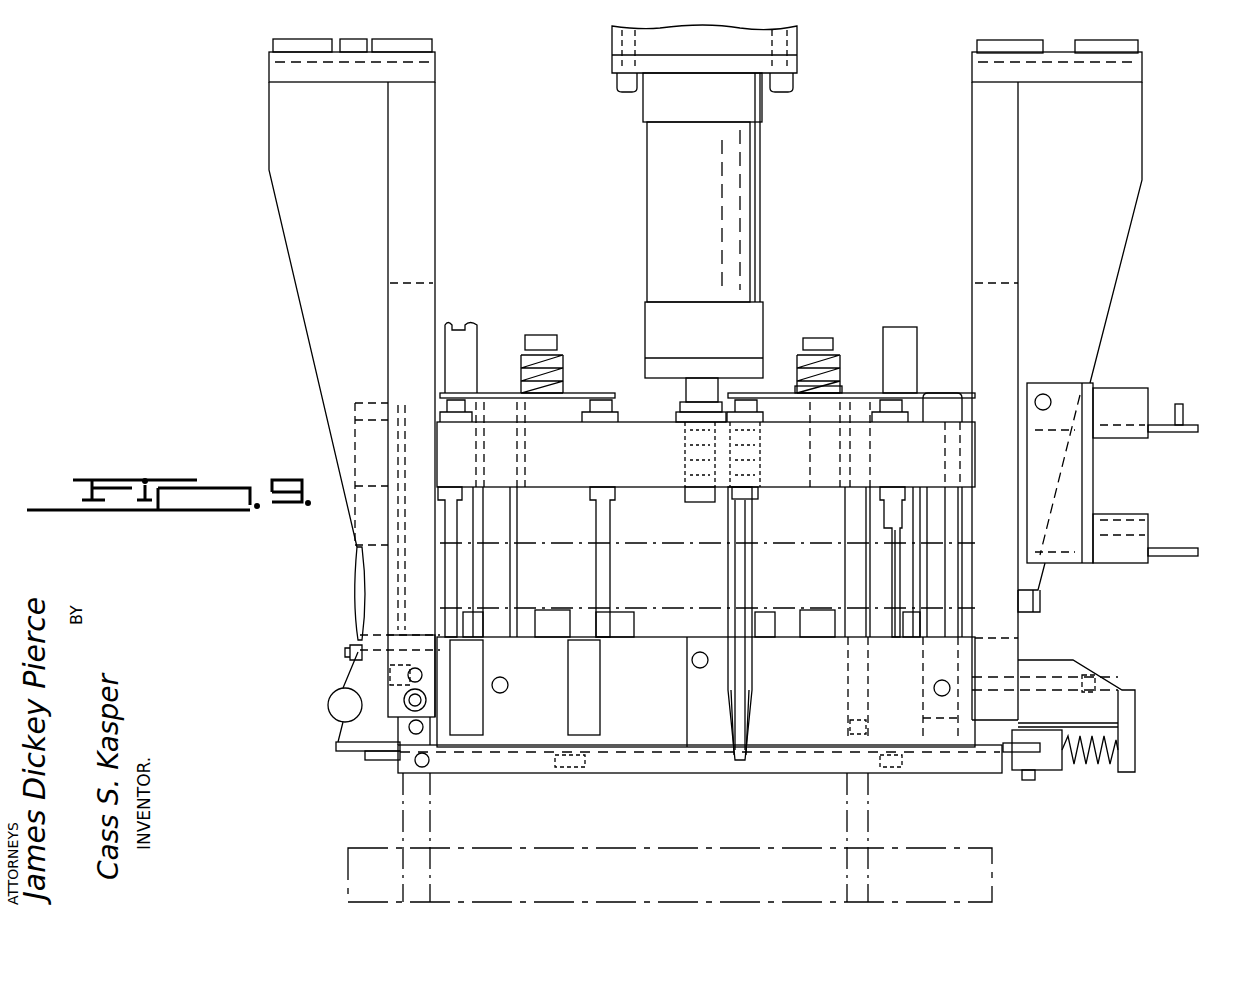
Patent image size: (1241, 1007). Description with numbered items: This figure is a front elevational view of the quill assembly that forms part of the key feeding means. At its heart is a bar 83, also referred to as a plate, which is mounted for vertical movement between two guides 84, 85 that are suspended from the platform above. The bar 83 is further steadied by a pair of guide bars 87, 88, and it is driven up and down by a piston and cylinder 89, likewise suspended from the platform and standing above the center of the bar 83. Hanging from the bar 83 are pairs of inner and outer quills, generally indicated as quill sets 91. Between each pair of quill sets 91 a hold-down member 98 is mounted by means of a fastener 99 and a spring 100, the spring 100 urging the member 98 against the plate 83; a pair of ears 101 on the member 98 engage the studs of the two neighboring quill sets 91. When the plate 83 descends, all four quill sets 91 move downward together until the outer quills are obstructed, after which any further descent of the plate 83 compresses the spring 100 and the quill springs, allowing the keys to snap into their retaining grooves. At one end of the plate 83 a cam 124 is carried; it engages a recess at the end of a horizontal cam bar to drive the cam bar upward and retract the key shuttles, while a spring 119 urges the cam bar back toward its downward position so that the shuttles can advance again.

The bar 83 is at (540, 460).
The guide 84 is at (295, 233).
The guide 85 is at (1108, 213).
The guide bar 87 is at (503, 513).
The guide bar 88 is at (940, 400).
The piston and cylinder 89 is at (745, 192).
The quill set 91 is at (463, 579).
The hold-down member 98 is at (501, 400).
The fastener 99 is at (548, 333).
The spring 100 is at (838, 368).
The ears 101 is at (742, 395).
The spring 119 is at (1095, 765).
The cam 124 is at (352, 620).